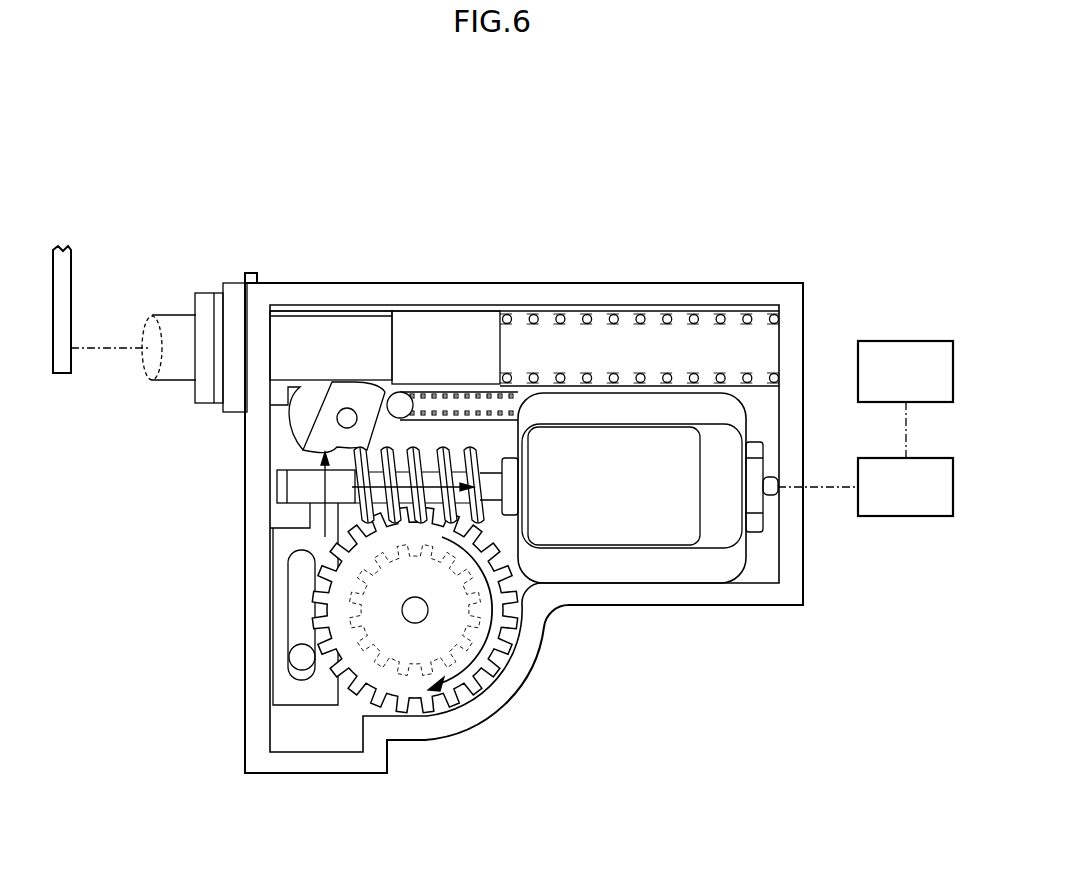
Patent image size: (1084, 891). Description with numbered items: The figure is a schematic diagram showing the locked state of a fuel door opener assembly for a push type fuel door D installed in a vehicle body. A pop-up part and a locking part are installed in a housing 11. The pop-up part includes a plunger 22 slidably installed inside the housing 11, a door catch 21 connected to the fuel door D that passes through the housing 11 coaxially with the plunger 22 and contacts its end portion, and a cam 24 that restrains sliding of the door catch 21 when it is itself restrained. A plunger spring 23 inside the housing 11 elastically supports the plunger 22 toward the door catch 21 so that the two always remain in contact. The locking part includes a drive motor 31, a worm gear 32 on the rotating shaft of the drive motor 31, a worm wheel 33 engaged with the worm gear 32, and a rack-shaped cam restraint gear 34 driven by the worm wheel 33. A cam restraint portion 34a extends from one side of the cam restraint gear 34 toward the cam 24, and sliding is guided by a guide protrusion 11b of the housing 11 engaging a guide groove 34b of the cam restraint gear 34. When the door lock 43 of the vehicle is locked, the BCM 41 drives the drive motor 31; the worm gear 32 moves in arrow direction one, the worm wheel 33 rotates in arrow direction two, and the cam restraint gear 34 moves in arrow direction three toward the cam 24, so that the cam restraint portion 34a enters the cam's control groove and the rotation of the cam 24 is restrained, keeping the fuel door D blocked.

The fuel door D is at (63, 288).
The housing 11 is at (605, 290).
The guide protrusion 11b is at (298, 657).
The door catch 21 is at (318, 328).
The plunger 22 is at (450, 328).
The plunger spring 23 is at (690, 310).
The cam 24 is at (315, 437).
The drive motor 31 is at (700, 563).
The worm gear 32 is at (472, 512).
The worm wheel 33 is at (473, 700).
The cam restraint gear 34 is at (280, 576).
The cam restraint portion 34a is at (305, 455).
The guide groove 34b is at (297, 605).
The BCM 41 is at (906, 516).
The door lock 43 is at (904, 341).